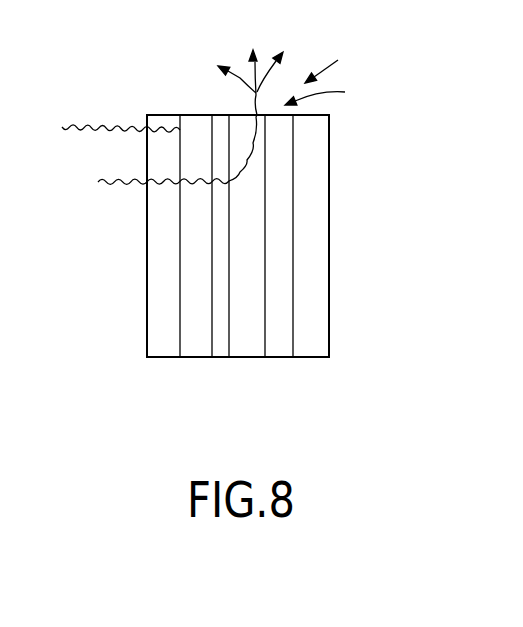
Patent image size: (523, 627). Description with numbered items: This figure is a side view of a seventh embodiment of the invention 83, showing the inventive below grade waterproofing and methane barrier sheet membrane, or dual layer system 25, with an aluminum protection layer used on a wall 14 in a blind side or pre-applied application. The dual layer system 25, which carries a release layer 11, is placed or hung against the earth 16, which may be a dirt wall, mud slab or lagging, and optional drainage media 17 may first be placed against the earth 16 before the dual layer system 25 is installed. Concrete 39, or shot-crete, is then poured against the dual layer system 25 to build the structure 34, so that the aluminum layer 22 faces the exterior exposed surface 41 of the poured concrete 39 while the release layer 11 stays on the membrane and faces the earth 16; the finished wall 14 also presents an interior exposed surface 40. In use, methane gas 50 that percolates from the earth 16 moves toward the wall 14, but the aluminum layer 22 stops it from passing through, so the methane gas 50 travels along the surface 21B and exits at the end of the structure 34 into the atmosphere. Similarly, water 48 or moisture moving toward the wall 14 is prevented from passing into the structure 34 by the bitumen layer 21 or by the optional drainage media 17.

The wall 14 is at (329, 268).
The earth 16 is at (163, 343).
The drainage media 17 is at (195, 343).
The release layer 11 is at (217, 343).
The bitumen layer 21 is at (245, 345).
The surface 21B is at (265, 187).
The aluminum layer 22 is at (277, 343).
The concrete 39 is at (313, 347).
The structure 34 is at (329, 205).
The exposed surface 40 is at (329, 297).
The exterior exposed surface 41 is at (293, 333).
The water 48 is at (82, 132).
The methane gas 50 is at (253, 92).
The seventh embodiment of the invention 83 is at (385, 68).
The dual layer system 25 is at (333, 104).